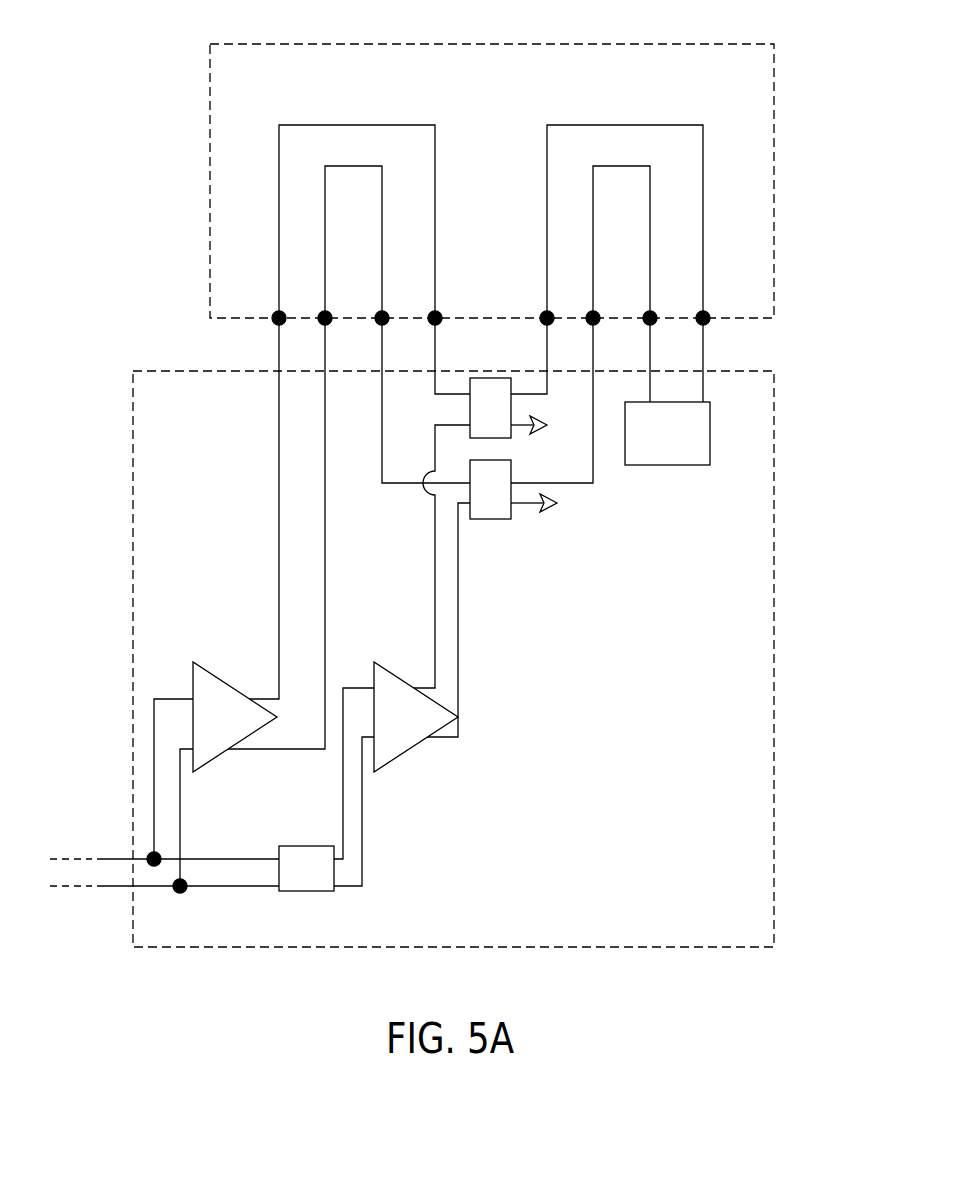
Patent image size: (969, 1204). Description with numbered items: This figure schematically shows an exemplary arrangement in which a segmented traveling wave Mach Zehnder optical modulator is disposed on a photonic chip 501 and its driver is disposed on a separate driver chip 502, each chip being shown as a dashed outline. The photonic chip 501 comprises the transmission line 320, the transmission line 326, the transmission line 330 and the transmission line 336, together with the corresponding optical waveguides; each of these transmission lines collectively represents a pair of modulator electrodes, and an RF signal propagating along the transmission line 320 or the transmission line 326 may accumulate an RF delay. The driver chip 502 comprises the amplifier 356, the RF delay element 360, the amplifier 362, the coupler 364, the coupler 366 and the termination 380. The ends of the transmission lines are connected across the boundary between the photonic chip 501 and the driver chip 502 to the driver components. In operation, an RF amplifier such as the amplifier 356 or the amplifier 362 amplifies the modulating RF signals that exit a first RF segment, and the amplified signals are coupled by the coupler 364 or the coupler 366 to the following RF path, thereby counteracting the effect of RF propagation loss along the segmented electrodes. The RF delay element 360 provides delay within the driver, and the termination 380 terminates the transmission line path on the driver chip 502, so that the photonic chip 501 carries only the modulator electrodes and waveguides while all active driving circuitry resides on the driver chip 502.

The photonic chip 501 is at (776, 80).
The driver chip 502 is at (775, 378).
The transmission line 320 is at (367, 122).
The transmission line 326 is at (326, 203).
The transmission line 330 is at (636, 122).
The transmission line 336 is at (594, 195).
The amplifier 356 is at (232, 683).
The amplifier 362 is at (418, 748).
The RF delay element 360 is at (320, 893).
The coupler 364 is at (483, 378).
The coupler 366 is at (495, 520).
The termination 380 is at (672, 466).